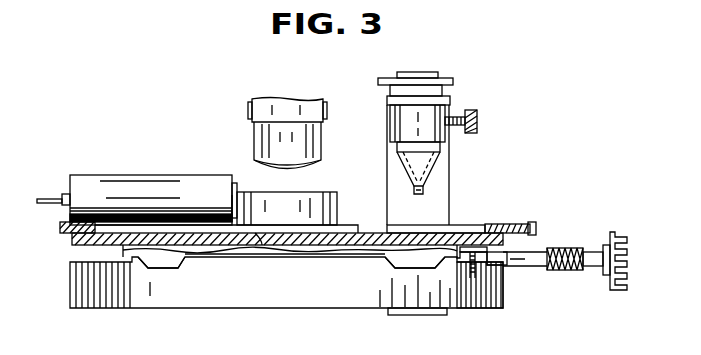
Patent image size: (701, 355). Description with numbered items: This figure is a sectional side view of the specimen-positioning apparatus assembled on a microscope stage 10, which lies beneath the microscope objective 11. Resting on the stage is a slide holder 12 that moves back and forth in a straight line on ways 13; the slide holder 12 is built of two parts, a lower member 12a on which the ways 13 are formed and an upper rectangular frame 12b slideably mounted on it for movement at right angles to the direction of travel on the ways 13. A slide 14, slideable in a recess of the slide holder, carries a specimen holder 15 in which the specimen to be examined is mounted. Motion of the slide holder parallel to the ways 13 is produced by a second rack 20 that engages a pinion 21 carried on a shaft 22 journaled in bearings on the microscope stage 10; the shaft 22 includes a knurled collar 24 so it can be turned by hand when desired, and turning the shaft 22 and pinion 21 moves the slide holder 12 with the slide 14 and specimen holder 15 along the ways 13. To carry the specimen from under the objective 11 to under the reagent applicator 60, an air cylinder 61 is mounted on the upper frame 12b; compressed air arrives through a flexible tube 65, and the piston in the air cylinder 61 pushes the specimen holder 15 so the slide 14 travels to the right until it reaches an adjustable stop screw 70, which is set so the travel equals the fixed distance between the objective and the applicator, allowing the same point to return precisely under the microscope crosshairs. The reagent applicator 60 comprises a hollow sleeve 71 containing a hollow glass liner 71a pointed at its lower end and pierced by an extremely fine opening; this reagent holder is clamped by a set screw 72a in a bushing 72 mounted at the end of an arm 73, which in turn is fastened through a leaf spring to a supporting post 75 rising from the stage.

The microscope stage 10 is at (145, 300).
The microscope objective 11 is at (255, 140).
The slide holder 12 is at (253, 244).
The lower member 12a is at (122, 250).
The upper rectangular frame 12b is at (60, 228).
The ways 13 is at (170, 265).
The slide 14 is at (257, 229).
The specimen holder 15 is at (337, 211).
The second rack 20 is at (472, 246).
The pinion 21 is at (462, 262).
The shaft 22 is at (490, 250).
The knurled collar 24 is at (568, 270).
The reagent applicator 60 is at (379, 124).
The air cylinder 61 is at (148, 175).
The flexible tube 65 is at (45, 199).
The adjustable stop screw 70 is at (533, 228).
The hollow sleeve 71 is at (440, 148).
The hollow glass liner 71a is at (430, 165).
The bushing 72 is at (400, 132).
The set screw 72a is at (478, 118).
The arm 73 is at (452, 100).
The supporting post 75 is at (387, 181).